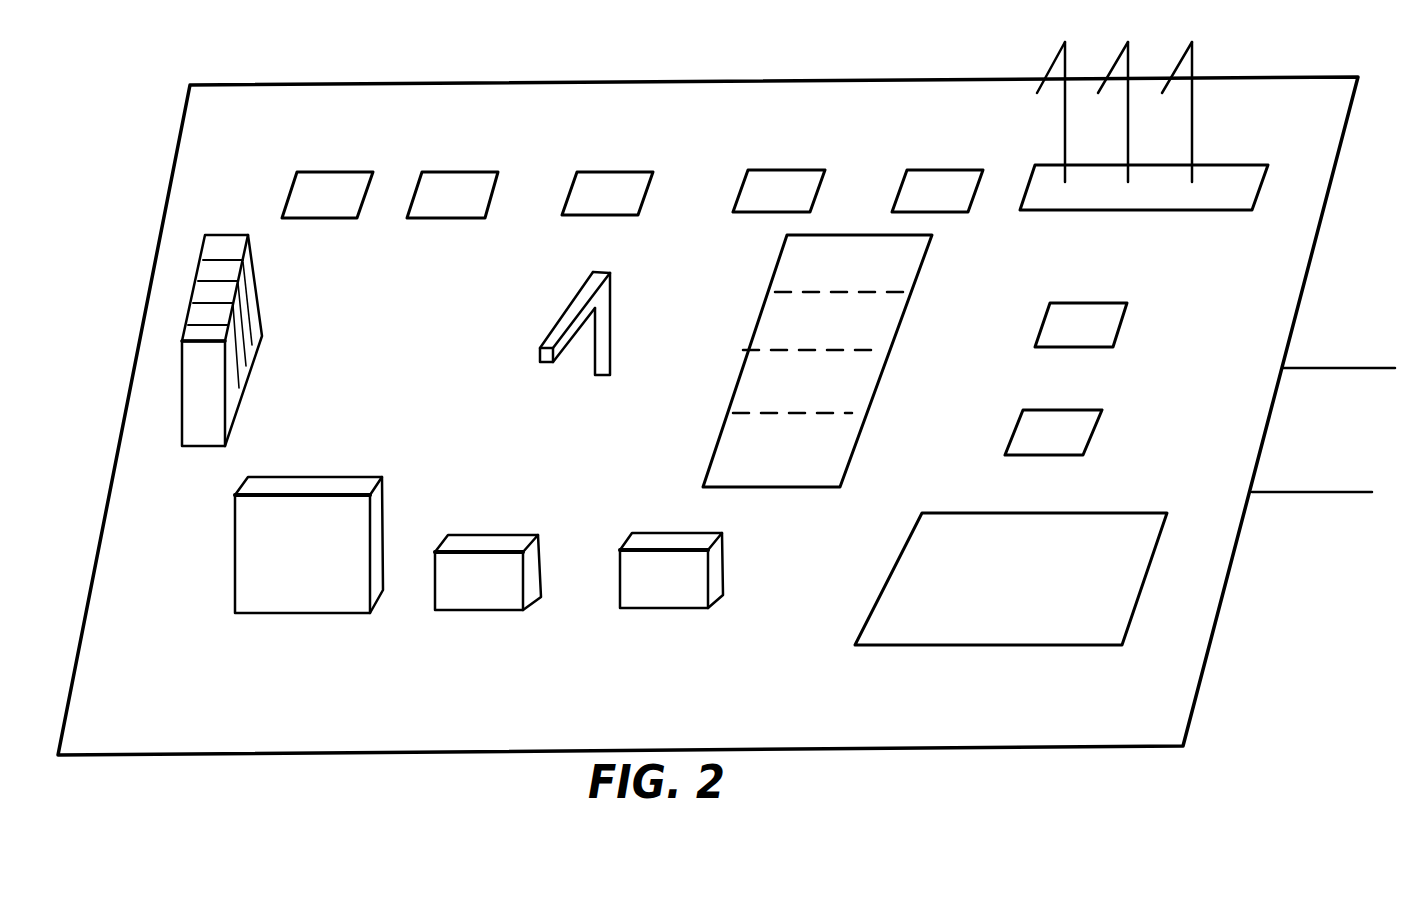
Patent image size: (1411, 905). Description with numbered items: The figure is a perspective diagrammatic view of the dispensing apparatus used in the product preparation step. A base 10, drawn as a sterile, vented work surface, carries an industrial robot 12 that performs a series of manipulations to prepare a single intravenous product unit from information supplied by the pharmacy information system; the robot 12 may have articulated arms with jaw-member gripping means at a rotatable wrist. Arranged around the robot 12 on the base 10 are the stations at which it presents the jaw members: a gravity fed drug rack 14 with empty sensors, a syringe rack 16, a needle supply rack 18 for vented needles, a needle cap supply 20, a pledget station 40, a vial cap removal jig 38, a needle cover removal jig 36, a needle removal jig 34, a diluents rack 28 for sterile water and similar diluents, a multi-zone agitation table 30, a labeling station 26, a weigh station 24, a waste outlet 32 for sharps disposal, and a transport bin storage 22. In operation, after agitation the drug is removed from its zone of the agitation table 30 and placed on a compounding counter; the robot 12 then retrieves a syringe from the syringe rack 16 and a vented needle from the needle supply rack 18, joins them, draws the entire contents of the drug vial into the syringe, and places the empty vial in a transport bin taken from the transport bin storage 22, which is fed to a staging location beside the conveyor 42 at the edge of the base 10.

The base 10 is at (1220, 646).
The industrial robot 12 is at (612, 287).
The gravity fed drug rack 14 is at (277, 298).
The syringe rack 16 is at (330, 613).
The needle supply rack 18 is at (557, 617).
The needle cap supply 20 is at (645, 592).
The transport bin storage 22 is at (878, 597).
The weigh station 24 is at (1110, 437).
The labeling station 26 is at (1128, 330).
The diluents rack 28 is at (1141, 197).
The multi-zone agitation table 30 is at (745, 353).
The waste outlet 32 is at (895, 167).
The needle removal jig 34 is at (730, 170).
The needle cover removal jig 36 is at (562, 173).
The vial cap removal jig 38 is at (438, 206).
The pledget station 40 is at (306, 206).
The conveyor 42 is at (1320, 478).